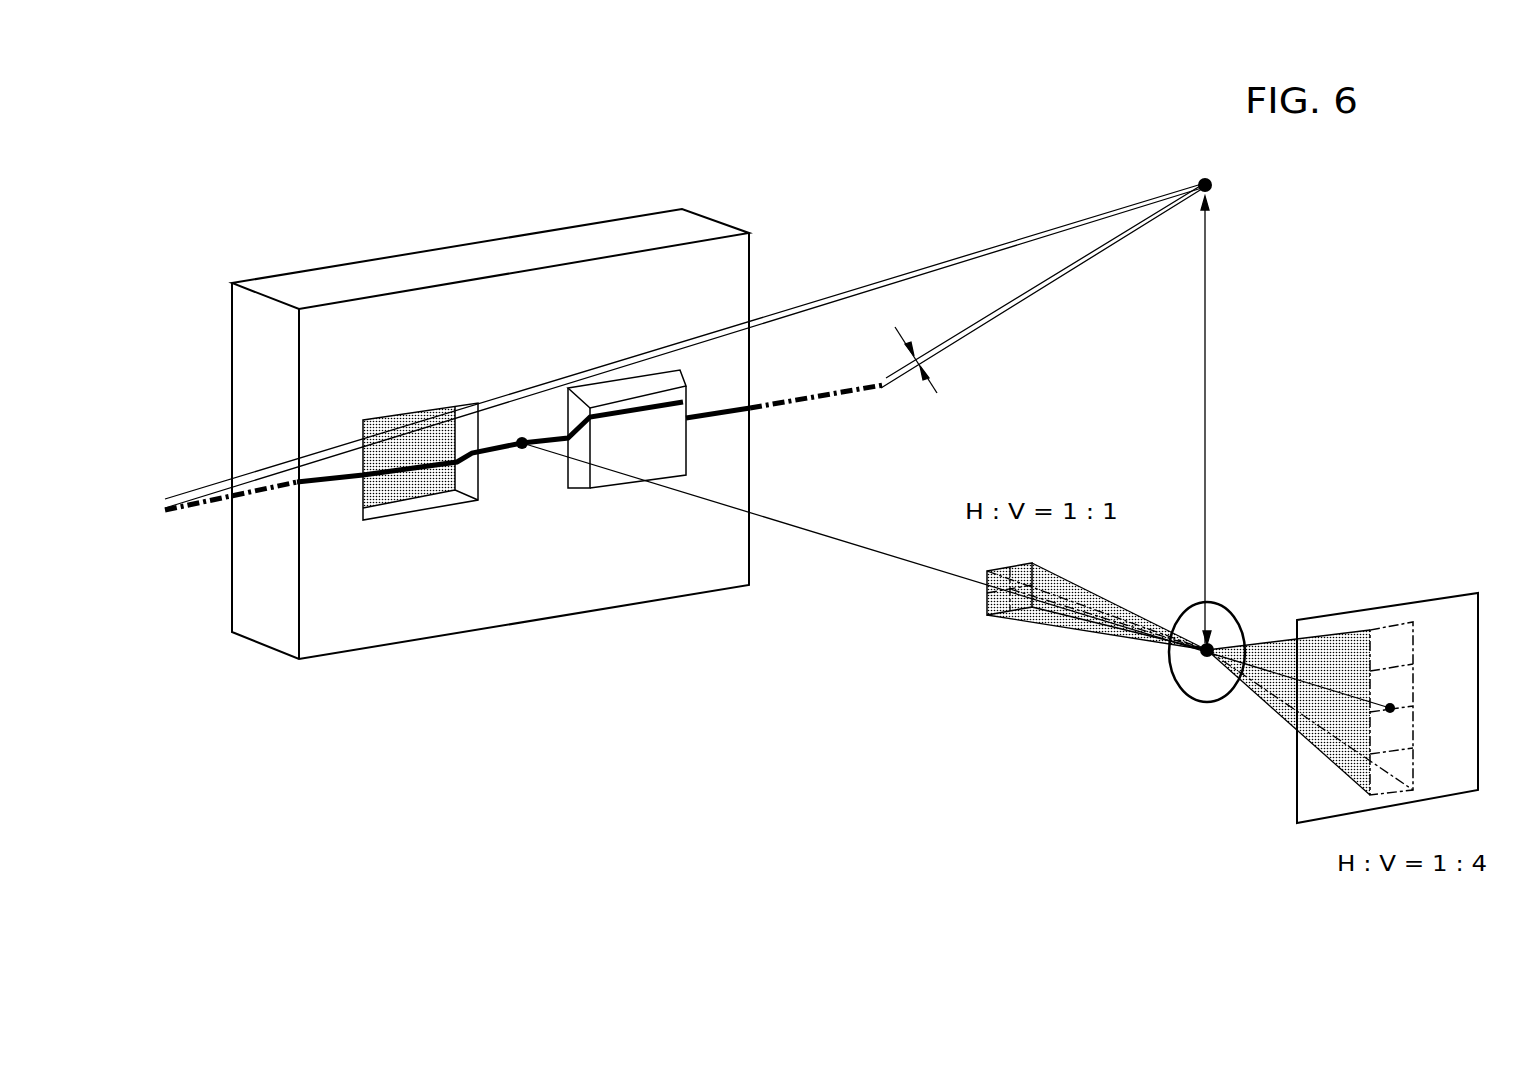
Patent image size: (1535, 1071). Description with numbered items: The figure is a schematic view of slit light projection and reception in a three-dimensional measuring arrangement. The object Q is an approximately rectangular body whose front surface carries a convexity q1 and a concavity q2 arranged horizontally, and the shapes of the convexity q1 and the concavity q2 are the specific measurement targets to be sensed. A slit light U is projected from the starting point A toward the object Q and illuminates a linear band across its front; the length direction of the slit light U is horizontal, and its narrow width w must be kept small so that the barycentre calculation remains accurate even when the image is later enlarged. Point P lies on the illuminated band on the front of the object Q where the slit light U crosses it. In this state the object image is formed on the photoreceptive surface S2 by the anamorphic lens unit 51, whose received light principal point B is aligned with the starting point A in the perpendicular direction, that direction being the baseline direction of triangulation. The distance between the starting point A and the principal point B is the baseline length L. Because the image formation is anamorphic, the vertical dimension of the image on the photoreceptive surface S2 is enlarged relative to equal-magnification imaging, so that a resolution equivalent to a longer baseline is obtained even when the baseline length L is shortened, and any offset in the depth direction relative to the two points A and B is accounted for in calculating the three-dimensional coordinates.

The object Q is at (500, 247).
The convexity q1 is at (608, 483).
The concavity q2 is at (387, 512).
The slit light U is at (773, 410).
The measurement point P is at (523, 450).
The starting point A is at (1204, 172).
The received light principal point B is at (1206, 671).
The anamorphic lens unit 51 is at (1232, 612).
The photoreceptive surface S2 is at (1392, 608).
The baseline length L is at (1301, 420).
The width of slit light w is at (685, 345).